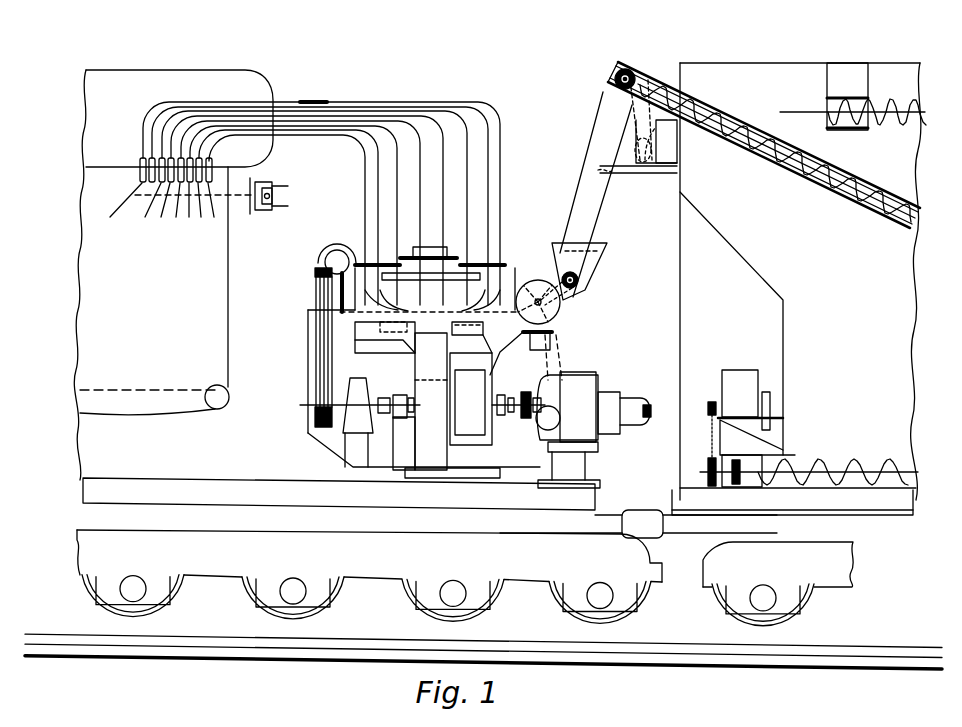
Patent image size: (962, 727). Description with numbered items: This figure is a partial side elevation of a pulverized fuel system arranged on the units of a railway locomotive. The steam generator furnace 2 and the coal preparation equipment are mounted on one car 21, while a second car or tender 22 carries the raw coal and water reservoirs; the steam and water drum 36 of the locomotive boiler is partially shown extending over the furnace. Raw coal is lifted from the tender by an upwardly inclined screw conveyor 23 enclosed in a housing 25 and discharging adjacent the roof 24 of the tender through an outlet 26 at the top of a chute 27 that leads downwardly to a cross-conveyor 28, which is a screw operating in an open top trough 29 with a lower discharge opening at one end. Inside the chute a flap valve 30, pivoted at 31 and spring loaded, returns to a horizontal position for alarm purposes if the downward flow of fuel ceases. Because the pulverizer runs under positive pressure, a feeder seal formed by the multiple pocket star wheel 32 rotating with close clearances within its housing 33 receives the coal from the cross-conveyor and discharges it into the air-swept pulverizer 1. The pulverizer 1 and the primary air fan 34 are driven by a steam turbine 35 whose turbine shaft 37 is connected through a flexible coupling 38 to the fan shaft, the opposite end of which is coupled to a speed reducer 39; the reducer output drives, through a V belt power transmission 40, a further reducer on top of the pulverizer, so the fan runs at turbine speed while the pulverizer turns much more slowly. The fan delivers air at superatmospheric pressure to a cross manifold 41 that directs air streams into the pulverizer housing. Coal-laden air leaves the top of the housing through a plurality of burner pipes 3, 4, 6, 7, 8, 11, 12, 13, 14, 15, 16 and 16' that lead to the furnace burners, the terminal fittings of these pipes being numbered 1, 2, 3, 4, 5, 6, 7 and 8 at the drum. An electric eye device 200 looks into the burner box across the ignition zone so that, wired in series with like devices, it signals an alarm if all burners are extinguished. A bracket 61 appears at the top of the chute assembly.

The air-swept pulverizer 1 is at (455, 486).
The steam generator furnace 2 is at (150, 306).
The burner pipe 3 is at (150, 197).
The burner pipe 4 is at (163, 197).
The cable 5 is at (176, 197).
The burner pipe 6 is at (187, 197).
The burner pipe 7 is at (199, 197).
The burner pipe 8 is at (420, 228).
The burner pipe 11 is at (443, 226).
The burner pipe 12 is at (500, 216).
The burner pipe 13 is at (365, 197).
The burner pipe 14 is at (468, 243).
The burner pipe 15 is at (393, 232).
The burner pipe 16 is at (335, 203).
The burner pipe 16' is at (288, 217).
The car 21 is at (598, 492).
The tender 22 is at (869, 338).
The screw conveyor 23 is at (742, 112).
The roof of the tender 24 is at (764, 131).
The housing 25 is at (748, 155).
The outlet 26 is at (638, 116).
The chute 27 is at (618, 212).
The cross-conveyor 28 is at (598, 271).
The open top trough 29 is at (561, 243).
The flap valve 30 is at (604, 172).
The pivot 31 is at (612, 148).
The star wheel 32 is at (540, 282).
The housing 33 is at (562, 310).
The primary air fan 34 is at (418, 440).
The steam turbine 35 is at (597, 382).
The steam and water drum 36 is at (215, 70).
The turbine shaft 37 is at (516, 415).
The flexible coupling 38 is at (514, 396).
The speed reducer 39 is at (353, 413).
The V belt power transmission 40 is at (320, 342).
The cross manifold 41 is at (388, 352).
The bracket 61 is at (665, 141).
The electric eye device 200 is at (247, 209).